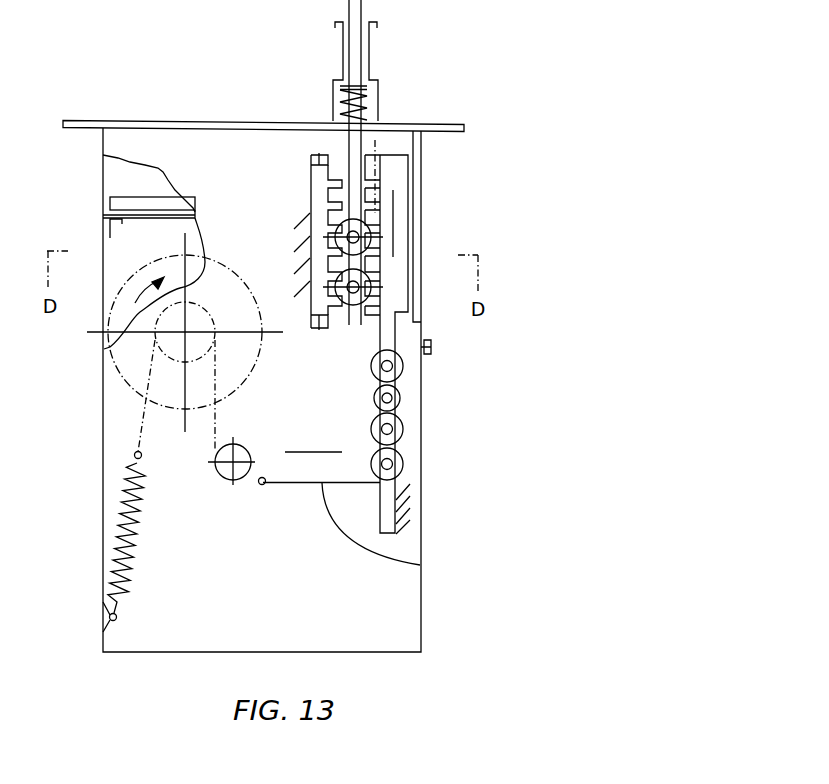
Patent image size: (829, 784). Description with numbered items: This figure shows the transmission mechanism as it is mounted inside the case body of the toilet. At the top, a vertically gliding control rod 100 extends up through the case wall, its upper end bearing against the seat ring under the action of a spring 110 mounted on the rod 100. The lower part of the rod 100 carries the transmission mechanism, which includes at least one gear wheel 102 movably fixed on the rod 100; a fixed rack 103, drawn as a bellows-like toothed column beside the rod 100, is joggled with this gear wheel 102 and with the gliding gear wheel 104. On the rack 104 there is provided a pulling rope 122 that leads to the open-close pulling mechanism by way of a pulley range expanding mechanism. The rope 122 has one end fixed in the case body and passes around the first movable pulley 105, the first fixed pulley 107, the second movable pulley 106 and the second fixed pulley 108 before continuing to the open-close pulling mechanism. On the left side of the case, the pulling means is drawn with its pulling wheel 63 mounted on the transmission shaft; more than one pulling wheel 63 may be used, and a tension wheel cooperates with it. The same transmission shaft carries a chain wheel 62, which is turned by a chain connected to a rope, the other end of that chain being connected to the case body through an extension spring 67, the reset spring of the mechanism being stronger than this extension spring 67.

The control rod 100 is at (363, 63).
The spring 110 is at (343, 100).
The bellows 103 is at (320, 193).
The gear wheel 102 is at (358, 222).
The gliding gear wheel 104 is at (393, 267).
The second movable pulley 106 is at (403, 363).
The first movable pulley 105 is at (397, 398).
The first fixed pulley 107 is at (393, 430).
The second fixed pulley 108 is at (395, 465).
The pulling rope 122 is at (400, 563).
The pulling wheel 63 is at (147, 267).
The chain wheel 62 is at (158, 337).
The extension spring 67 is at (117, 543).